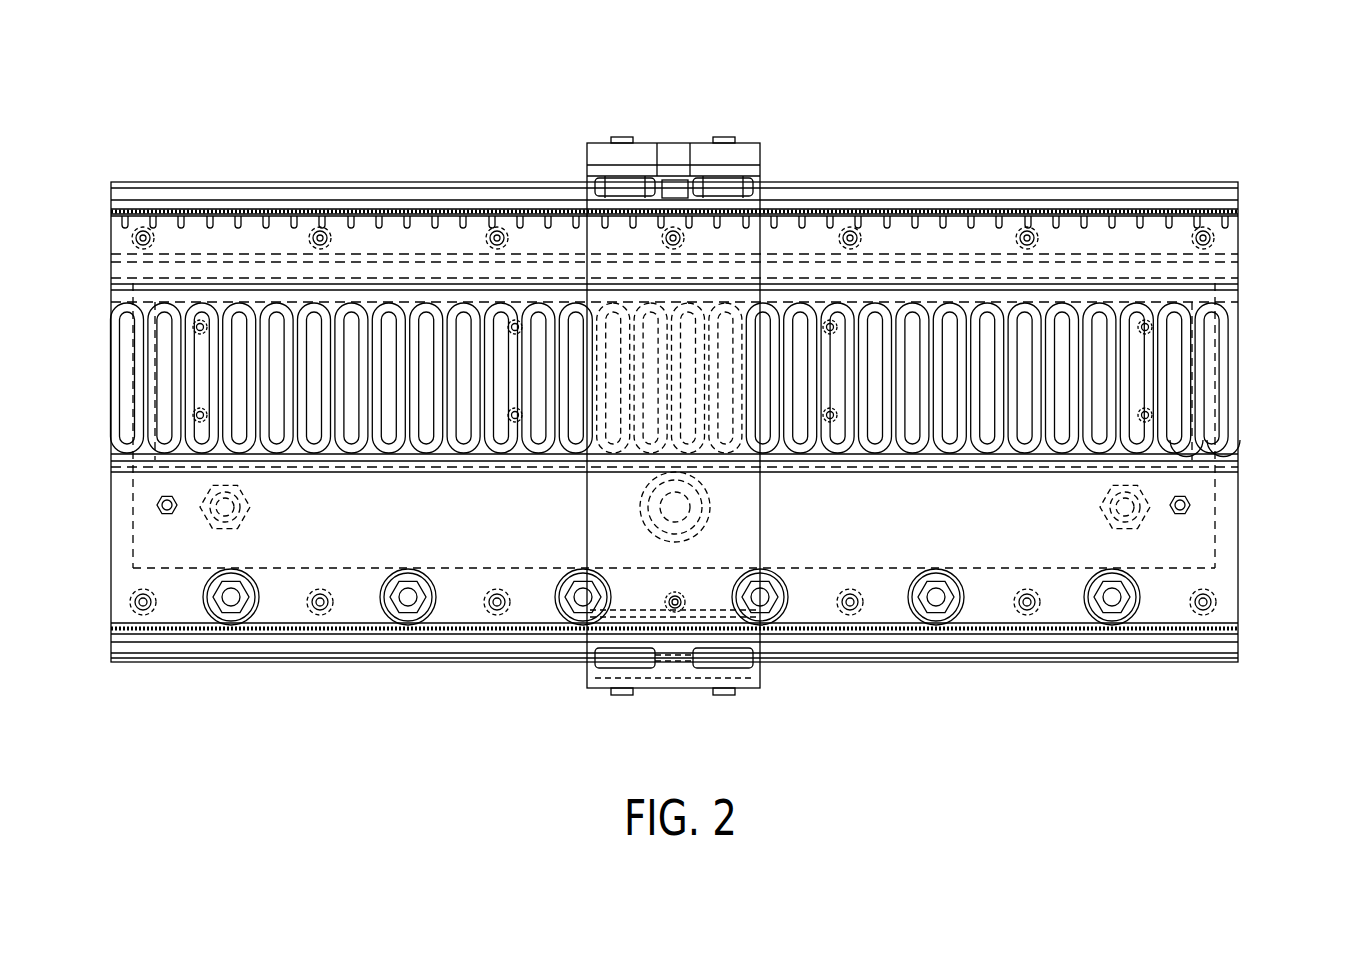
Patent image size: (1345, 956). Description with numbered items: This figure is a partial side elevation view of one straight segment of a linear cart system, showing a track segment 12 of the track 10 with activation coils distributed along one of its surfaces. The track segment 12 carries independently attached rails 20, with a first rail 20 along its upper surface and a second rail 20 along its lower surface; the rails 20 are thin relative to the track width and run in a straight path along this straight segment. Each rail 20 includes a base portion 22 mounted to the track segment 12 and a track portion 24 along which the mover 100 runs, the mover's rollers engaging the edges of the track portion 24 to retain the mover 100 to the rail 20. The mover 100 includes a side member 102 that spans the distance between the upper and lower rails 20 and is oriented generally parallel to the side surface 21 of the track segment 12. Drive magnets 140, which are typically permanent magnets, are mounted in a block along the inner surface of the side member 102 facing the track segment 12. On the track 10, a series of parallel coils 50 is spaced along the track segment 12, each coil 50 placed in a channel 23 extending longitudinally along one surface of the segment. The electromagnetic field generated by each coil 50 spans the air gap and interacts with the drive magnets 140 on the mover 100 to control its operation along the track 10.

The track 10 is at (1153, 103).
The track segment 12 is at (1242, 248).
The rail 20 is at (984, 186).
The side surface 21 is at (1226, 513).
The base portion 22 is at (886, 201).
The channel 23 is at (1230, 306).
The track portion 24 is at (940, 191).
The coil 50 is at (1187, 434).
The mover 100 is at (748, 140).
The side member 102 is at (760, 532).
The drive magnet 140 is at (717, 445).